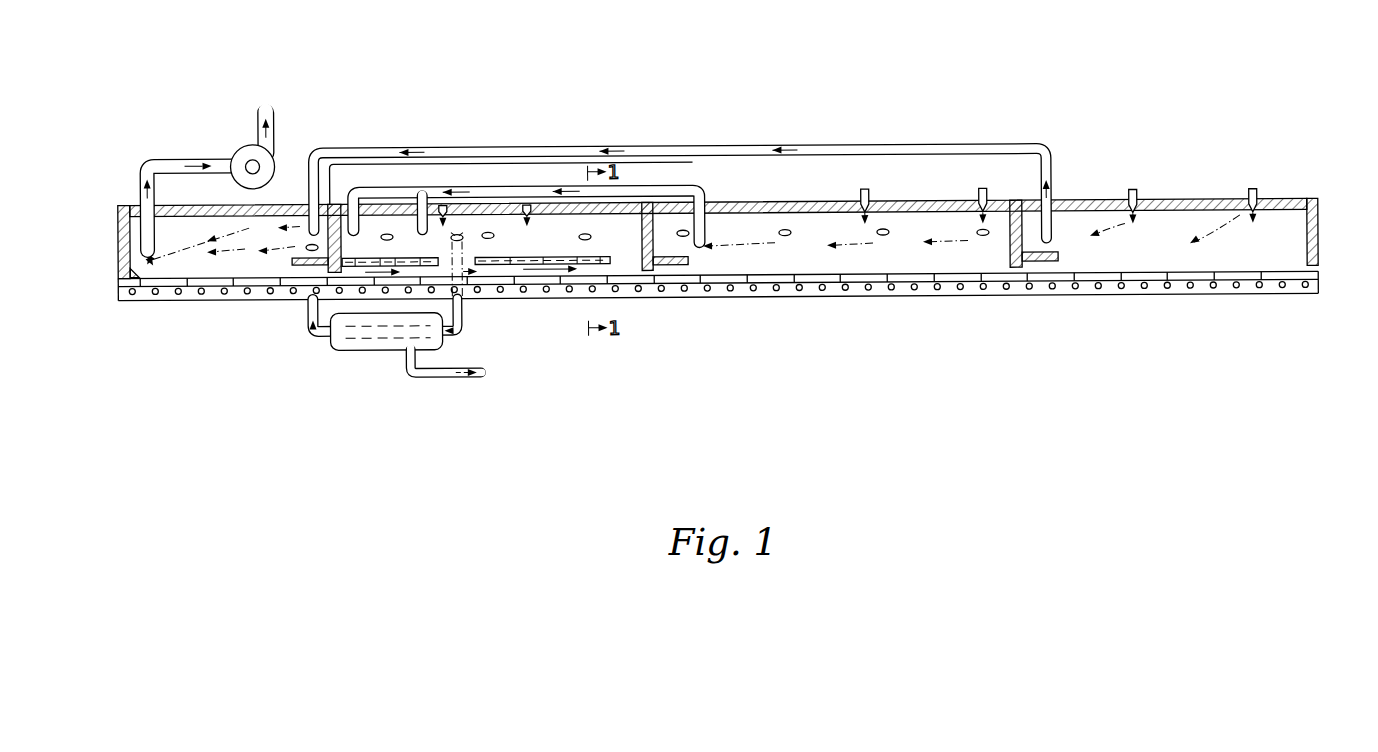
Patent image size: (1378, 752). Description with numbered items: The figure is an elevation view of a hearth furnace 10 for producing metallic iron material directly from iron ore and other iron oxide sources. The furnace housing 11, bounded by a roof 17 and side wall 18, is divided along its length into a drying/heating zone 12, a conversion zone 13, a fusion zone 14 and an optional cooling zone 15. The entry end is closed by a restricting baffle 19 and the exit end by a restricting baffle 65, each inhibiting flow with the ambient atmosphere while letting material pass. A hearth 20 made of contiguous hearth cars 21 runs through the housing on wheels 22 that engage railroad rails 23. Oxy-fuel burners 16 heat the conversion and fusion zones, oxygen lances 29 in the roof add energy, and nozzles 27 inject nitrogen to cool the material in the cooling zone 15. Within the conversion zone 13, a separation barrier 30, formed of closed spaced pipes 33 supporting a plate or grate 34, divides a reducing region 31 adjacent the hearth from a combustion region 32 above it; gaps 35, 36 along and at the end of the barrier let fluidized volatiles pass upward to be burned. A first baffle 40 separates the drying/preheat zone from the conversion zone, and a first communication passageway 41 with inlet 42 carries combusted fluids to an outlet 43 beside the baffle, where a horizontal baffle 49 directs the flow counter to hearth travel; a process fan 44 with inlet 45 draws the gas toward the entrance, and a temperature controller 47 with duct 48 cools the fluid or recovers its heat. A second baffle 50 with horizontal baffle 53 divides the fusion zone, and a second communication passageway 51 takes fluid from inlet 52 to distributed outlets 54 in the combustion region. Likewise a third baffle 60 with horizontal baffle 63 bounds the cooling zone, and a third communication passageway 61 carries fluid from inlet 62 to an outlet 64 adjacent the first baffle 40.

The hearth furnace 10 is at (703, 256).
The furnace housing 11 is at (186, 200).
The drying/heating zone 12 is at (700, 320).
The conversion zone 13 is at (552, 247).
The fusion zone 14 is at (847, 264).
The cooling zone 15 is at (1163, 256).
The oxy-fuel burners 16 is at (585, 233).
The roof 17 is at (757, 201).
The side wall 18 is at (794, 254).
The restricting baffle 19 is at (117, 212).
The hearth 20 is at (134, 269).
The hearth cars 21 is at (167, 284).
The wheels 22 is at (152, 289).
The railroad rails 23 is at (208, 298).
The nozzles 27 is at (1134, 191).
The oxygen lances 29 is at (441, 205).
The separation barrier 30 is at (495, 265).
The reducing region 31 is at (518, 274).
The combustion region 32 is at (507, 224).
The closed spaced pipes 33 is at (368, 256).
The plate or grate 34 is at (398, 256).
The gap 35 is at (463, 264).
The gap 36 is at (595, 247).
The first baffle 40 is at (305, 245).
The first communication passageway 41 is at (309, 330).
The inlet 42 is at (459, 233).
The outlet 43 is at (333, 225).
The process fan 44 is at (248, 160).
The inlet 45 is at (117, 238).
The temperature controller 47 is at (372, 350).
The duct 48 is at (440, 377).
The horizontal baffle 49 is at (302, 264).
The second baffle 50 is at (675, 192).
The second communication passageway 51 is at (643, 182).
The inlet 52 is at (701, 247).
The horizontal baffle 53 is at (672, 265).
The outlets 54 is at (362, 215).
The third baffle 60 is at (1010, 250).
The third communication passageway 61 is at (666, 162).
The inlet 62 is at (1053, 264).
The horizontal baffle 63 is at (1032, 264).
The outlet 64 is at (312, 215).
The restricting baffle 65 is at (1318, 205).